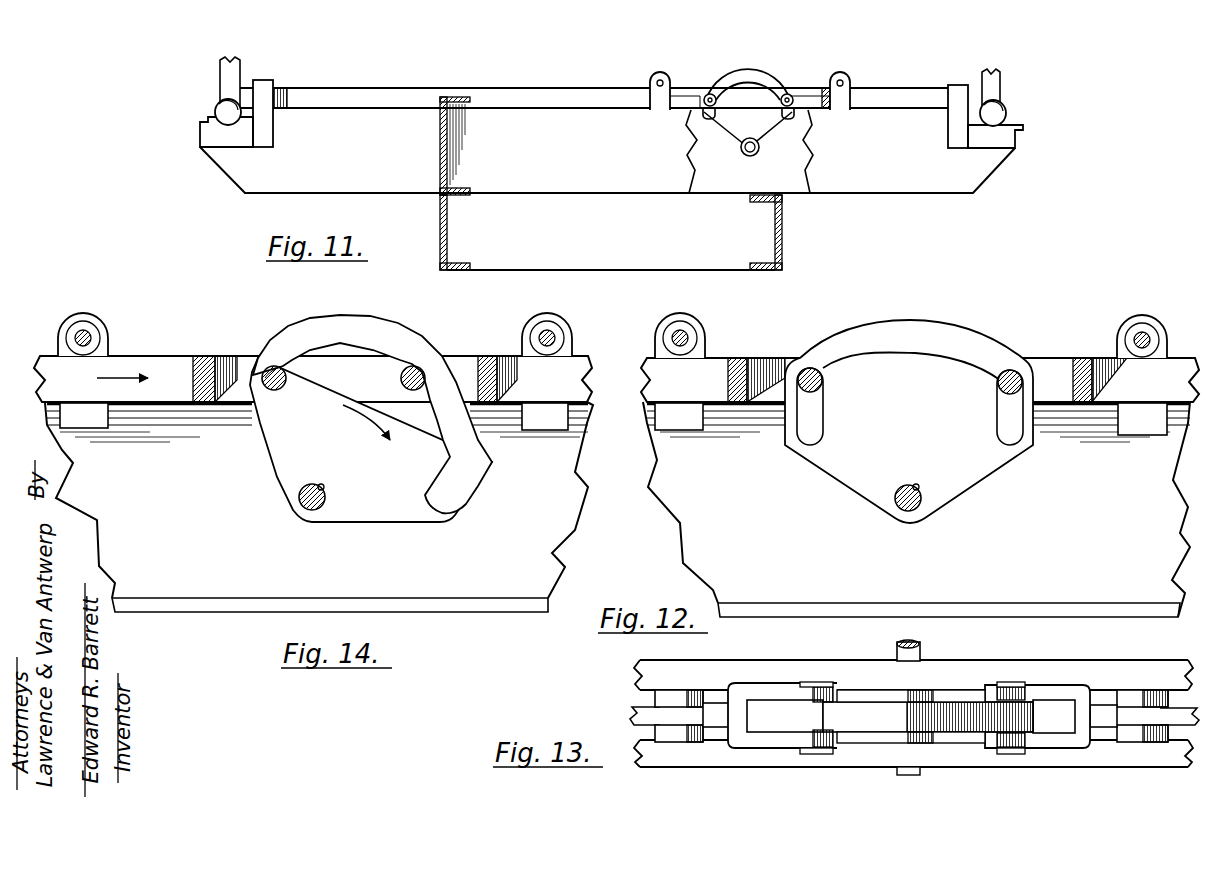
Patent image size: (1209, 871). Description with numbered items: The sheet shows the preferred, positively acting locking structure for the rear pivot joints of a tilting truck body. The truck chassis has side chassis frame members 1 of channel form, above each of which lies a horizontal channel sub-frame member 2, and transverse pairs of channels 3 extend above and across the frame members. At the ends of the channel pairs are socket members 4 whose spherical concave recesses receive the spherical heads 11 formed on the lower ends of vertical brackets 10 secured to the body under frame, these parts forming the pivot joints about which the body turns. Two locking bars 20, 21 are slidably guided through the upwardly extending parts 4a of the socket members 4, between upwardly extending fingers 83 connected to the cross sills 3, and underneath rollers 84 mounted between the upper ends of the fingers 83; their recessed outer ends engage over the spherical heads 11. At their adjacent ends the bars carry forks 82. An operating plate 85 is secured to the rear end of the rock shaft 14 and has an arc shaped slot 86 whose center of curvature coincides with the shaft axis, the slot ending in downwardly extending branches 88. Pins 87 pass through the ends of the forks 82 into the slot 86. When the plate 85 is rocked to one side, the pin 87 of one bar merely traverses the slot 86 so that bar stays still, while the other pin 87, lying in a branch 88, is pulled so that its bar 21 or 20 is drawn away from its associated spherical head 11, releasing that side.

In FIG. 11, the side chassis frame member 1 is at (440, 230).
In FIG. 11, the channel sub-frame member 2 is at (440, 135).
In FIG. 11, the transverse channel 3 is at (345, 178).
In FIG. 14, the transverse channel 3 is at (201, 585).
In FIG. 12, the transverse channel 3 is at (668, 480).
In FIG. 13, the transverse channel 3 is at (720, 670).
In FIG. 11, the socket member 4 is at (256, 146).
In FIG. 11, the upwardly extending part of socket member 4a is at (265, 84).
In FIG. 11, the vertical bracket 10 is at (228, 72).
In FIG. 11, the spherical head 11 is at (213, 112).
In FIG. 11, the rock shaft 14 is at (754, 156).
In FIG. 14, the rock shaft 14 is at (300, 500).
In FIG. 12, the rock shaft 14 is at (897, 507).
In FIG. 13, the rock shaft 14 is at (920, 653).
In FIG. 11, the locking bar 20 is at (888, 102).
In FIG. 14, the locking bar 20 is at (581, 362).
In FIG. 12, the locking bar 20 is at (1127, 393).
In FIG. 13, the locking bar 20 is at (1107, 722).
In FIG. 11, the locking bar 21 is at (404, 96).
In FIG. 14, the locking bar 21 is at (128, 362).
In FIG. 12, the locking bar 21 is at (650, 382).
In FIG. 13, the locking bar 21 is at (632, 716).
In FIG. 11, the fork 82 is at (685, 90).
In FIG. 14, the fork 82 is at (223, 355).
In FIG. 12, the fork 82 is at (750, 360).
In FIG. 13, the fork 82 is at (745, 695).
In FIG. 11, the finger 83 is at (653, 98).
In FIG. 14, the finger 83 is at (102, 322).
In FIG. 12, the finger 83 is at (679, 322).
In FIG. 13, the finger 83 is at (680, 730).
In FIG. 14, the roller 84 is at (79, 326).
In FIG. 12, the roller 84 is at (688, 336).
In FIG. 13, the roller 84 is at (667, 715).
In FIG. 11, the operating plate 85 is at (729, 127).
In FIG. 14, the operating plate 85 is at (286, 443).
In FIG. 12, the operating plate 85 is at (838, 460).
In FIG. 13, the operating plate 85 is at (853, 710).
In FIG. 11, the arc shaped slot 86 is at (753, 85).
In FIG. 14, the arc shaped slot 86 is at (358, 343).
In FIG. 12, the arc shaped slot 86 is at (893, 345).
In FIG. 11, the pin 87 is at (712, 93).
In FIG. 14, the pin 87 is at (283, 385).
In FIG. 12, the pin 87 is at (820, 387).
In FIG. 13, the pin 87 is at (803, 757).
In FIG. 14, the branch slot 88 is at (300, 358).
In FIG. 12, the branch slot 88 is at (817, 433).